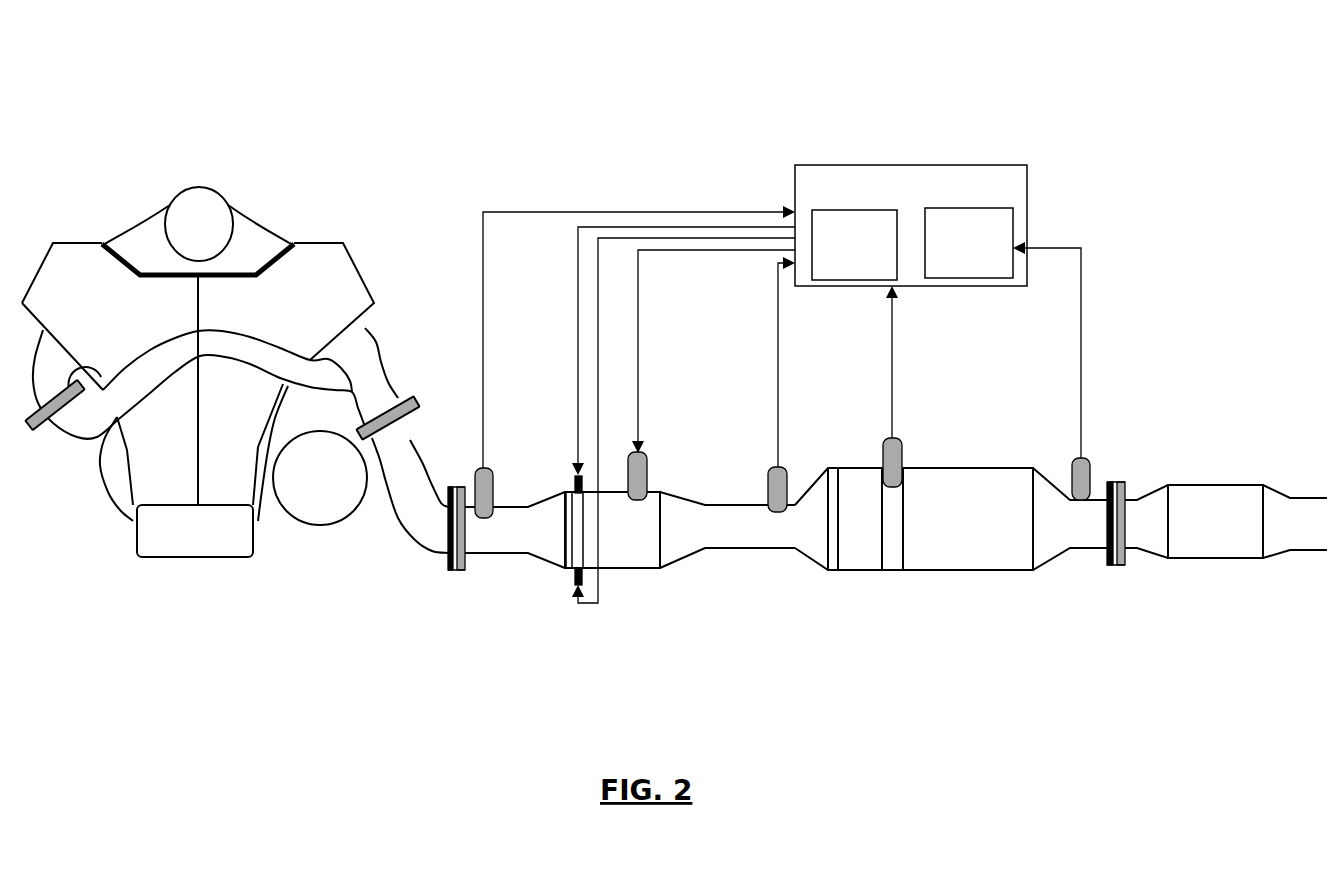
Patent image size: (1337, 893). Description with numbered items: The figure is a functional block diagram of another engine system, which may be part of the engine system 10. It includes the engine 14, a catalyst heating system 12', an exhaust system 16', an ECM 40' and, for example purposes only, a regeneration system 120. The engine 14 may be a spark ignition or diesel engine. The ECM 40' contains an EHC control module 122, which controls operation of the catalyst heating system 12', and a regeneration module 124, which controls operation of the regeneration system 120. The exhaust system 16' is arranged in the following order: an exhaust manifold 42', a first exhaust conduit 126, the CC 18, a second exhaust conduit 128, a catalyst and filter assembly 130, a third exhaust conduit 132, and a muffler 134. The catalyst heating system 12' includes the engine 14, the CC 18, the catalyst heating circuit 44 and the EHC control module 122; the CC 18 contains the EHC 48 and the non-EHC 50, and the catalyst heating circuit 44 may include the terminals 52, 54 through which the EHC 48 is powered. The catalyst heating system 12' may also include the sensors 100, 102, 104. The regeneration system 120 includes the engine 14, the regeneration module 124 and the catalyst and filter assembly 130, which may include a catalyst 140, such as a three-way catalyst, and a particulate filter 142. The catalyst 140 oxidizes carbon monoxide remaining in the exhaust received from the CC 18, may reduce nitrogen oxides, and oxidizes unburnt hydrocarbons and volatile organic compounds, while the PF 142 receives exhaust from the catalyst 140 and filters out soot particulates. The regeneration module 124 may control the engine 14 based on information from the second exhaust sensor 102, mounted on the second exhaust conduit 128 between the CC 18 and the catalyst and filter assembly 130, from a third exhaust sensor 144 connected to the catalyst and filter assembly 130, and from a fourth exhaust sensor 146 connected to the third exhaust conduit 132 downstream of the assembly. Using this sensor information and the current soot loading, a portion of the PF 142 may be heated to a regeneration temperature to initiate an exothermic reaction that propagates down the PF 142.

The engine system 10 is at (106, 110).
The catalyst heating system 12' is at (1044, 123).
The engine 14 is at (80, 243).
The exhaust system 16' is at (396, 666).
The catalytic converter (CC) 18 is at (612, 569).
The engine control module (ECM) 40' is at (911, 200).
The exhaust manifold 42' is at (236, 414).
The catalyst heating circuit 44 is at (512, 186).
The electrically heated catalyst (EHC) 48 is at (572, 530).
The non-EHC 50 is at (628, 548).
The terminal 52 is at (576, 474).
The terminal 54 is at (577, 585).
The first exhaust sensor 100 is at (478, 469).
The second flow, pressure and/or temperature exhaust sensor 102 is at (770, 469).
The exhaust sensor 104 is at (646, 452).
The regeneration system 120 is at (908, 602).
The EHC control module 122 is at (848, 208).
The regeneration module 124 is at (964, 208).
The first exhaust conduit 126 is at (483, 553).
The second exhaust conduit 128 is at (738, 549).
The catalyst and filter assembly 130 is at (967, 466).
The third exhaust conduit 132 is at (1085, 548).
The muffler 134 is at (1215, 485).
The catalyst 140 is at (833, 538).
The particulate filter (PF) 142 is at (995, 552).
The third flow, pressure and/or temperature exhaust sensor 144 is at (884, 460).
The fourth flow, pressure and/or temperature exhaust sensor 146 is at (1073, 463).